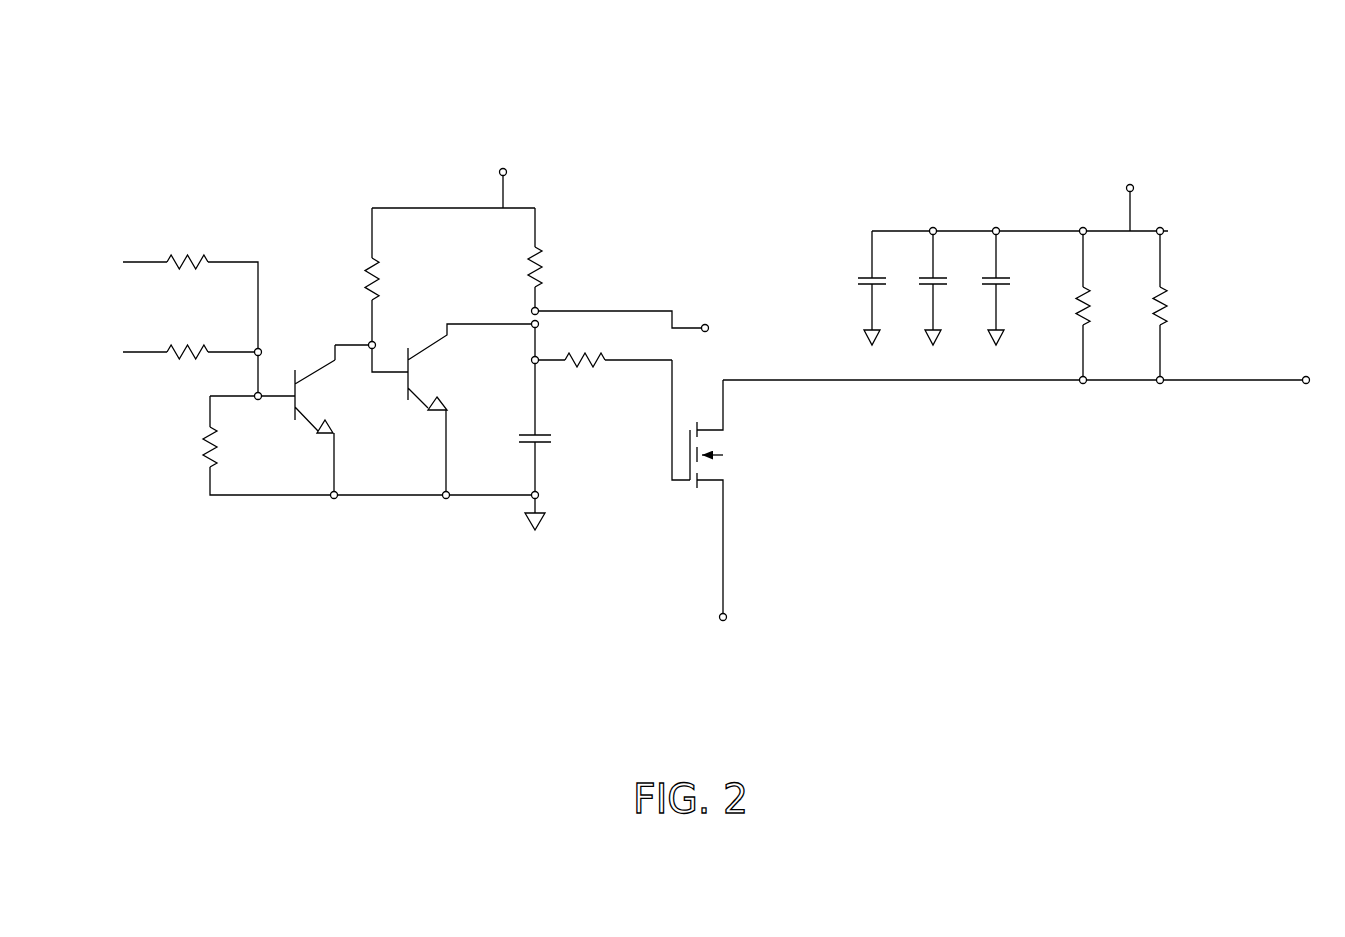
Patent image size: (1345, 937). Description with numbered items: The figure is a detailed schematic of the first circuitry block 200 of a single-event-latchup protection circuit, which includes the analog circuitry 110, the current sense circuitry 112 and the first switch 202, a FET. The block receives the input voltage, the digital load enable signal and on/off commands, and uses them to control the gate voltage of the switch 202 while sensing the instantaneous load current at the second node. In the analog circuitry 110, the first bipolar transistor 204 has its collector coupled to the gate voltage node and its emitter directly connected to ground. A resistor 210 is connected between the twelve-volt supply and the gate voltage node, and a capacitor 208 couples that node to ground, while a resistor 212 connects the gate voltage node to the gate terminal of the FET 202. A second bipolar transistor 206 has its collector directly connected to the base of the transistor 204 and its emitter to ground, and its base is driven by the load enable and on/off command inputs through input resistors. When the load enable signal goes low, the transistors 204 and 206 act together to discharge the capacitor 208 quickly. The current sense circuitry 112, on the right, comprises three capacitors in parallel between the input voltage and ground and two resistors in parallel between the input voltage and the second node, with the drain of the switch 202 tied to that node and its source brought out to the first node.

The first circuitry block 200 is at (1264, 129).
The analog circuitry 110 is at (175, 580).
The current sense circuitry 112 is at (905, 580).
The first switch 202 is at (694, 508).
The first bipolar transistor 204 is at (425, 424).
The bipolar transistor 206 is at (315, 447).
The capacitor 208 is at (550, 441).
The resistor 210 is at (538, 250).
The resistor 212 is at (607, 361).